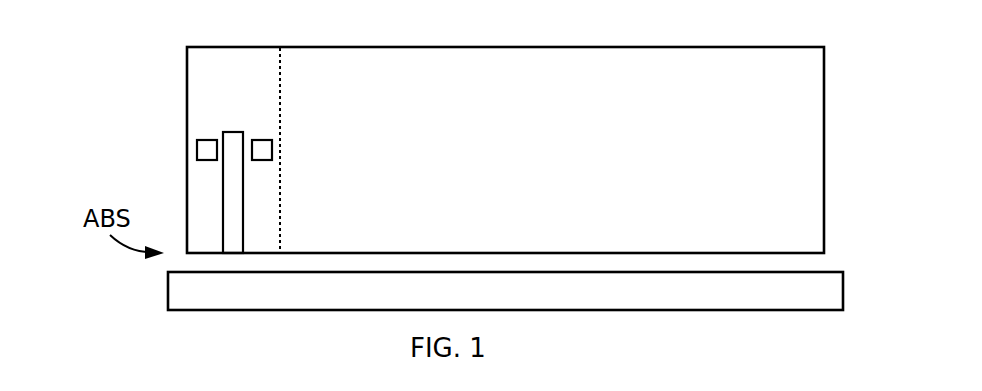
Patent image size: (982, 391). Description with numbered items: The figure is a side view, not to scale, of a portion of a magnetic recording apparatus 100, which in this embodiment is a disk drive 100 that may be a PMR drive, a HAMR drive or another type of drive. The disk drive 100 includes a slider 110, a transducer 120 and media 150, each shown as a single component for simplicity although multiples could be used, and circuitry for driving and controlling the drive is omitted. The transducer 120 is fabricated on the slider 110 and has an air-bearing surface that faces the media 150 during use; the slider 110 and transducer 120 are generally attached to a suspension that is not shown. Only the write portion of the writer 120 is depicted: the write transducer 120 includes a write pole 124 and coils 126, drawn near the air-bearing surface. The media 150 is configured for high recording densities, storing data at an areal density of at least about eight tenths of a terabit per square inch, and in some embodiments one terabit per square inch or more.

The magnetic recording apparatus 100 is at (60, 40).
The slider 110 is at (824, 103).
The transducer 120 is at (186, 68).
The write pole 124 is at (223, 208).
The coil(s) 126 is at (262, 139).
The media 150 is at (168, 308).